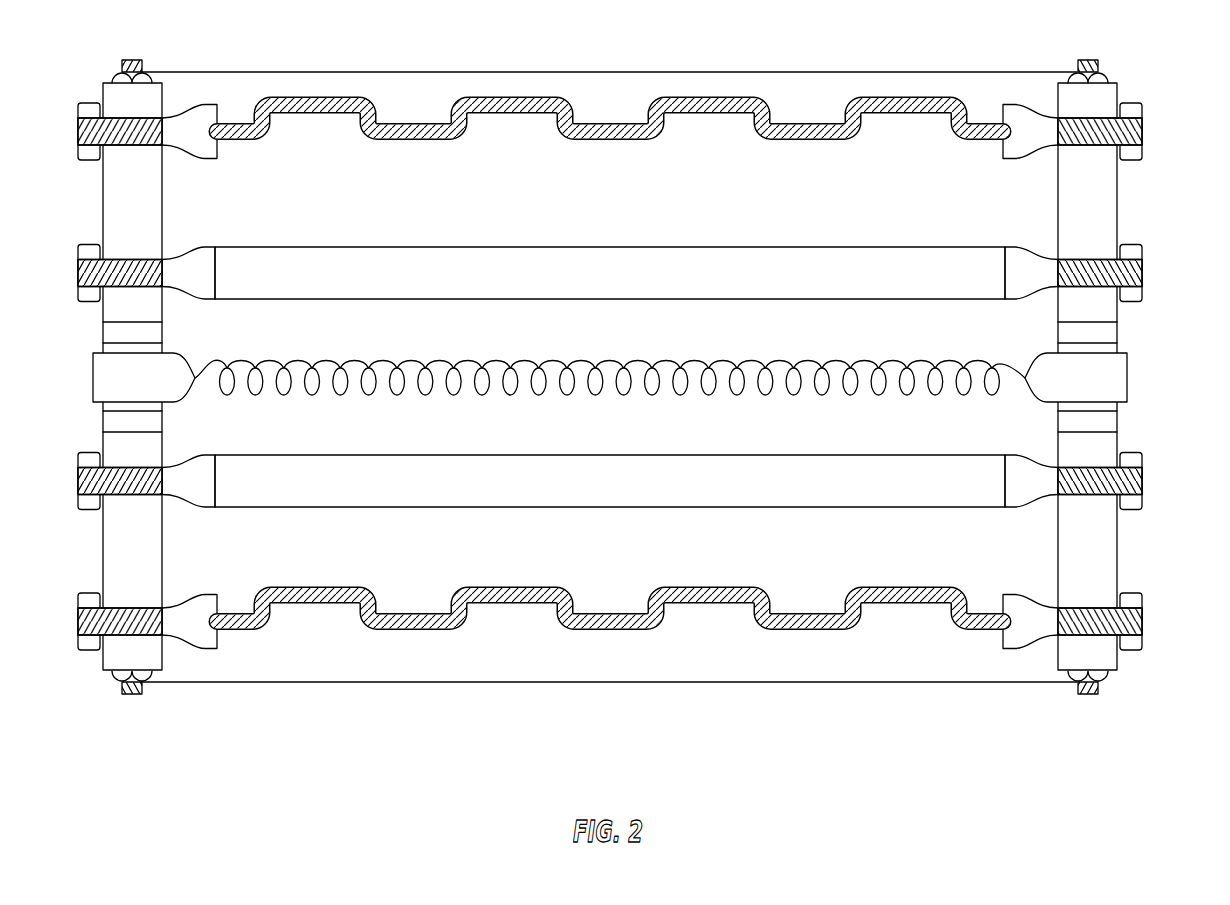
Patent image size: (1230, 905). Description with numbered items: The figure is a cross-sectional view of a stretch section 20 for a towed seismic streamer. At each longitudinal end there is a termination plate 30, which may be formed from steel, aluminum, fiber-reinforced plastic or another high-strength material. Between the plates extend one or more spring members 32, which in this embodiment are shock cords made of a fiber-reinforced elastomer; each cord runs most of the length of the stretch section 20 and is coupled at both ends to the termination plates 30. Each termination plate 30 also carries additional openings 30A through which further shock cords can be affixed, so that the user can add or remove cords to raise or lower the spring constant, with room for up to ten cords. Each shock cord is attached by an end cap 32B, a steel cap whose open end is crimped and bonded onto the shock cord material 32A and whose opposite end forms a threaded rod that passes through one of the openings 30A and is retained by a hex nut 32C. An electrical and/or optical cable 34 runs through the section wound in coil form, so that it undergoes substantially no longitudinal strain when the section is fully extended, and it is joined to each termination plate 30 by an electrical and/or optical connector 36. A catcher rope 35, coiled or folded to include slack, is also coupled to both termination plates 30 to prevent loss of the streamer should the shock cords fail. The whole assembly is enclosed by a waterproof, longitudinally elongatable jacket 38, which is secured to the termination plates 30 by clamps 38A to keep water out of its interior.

The stretch section 20 is at (612, 413).
The termination plate 30 is at (148, 200).
The openings 30A is at (108, 333).
The spring member 32 is at (610, 386).
The shock cord material 32A is at (650, 278).
The end cap 32B is at (212, 252).
The hex nut 32C is at (93, 246).
The electrical and/or optical cable 34 is at (493, 361).
The catcher rope 35 is at (695, 97).
The electrical and/or optical connector 36 is at (108, 378).
The jacket 38 is at (618, 72).
The clamps 38A is at (130, 696).